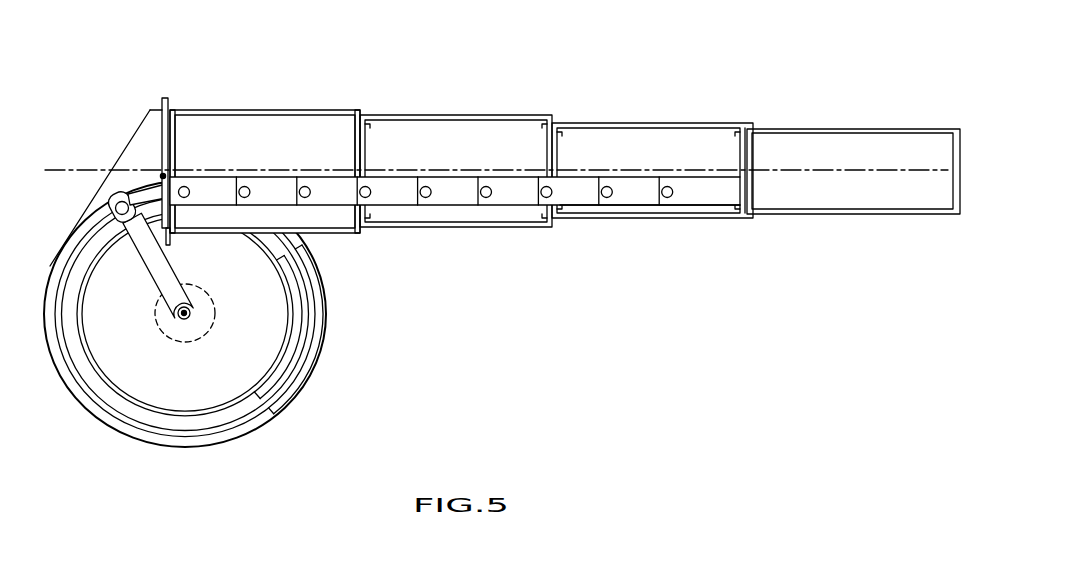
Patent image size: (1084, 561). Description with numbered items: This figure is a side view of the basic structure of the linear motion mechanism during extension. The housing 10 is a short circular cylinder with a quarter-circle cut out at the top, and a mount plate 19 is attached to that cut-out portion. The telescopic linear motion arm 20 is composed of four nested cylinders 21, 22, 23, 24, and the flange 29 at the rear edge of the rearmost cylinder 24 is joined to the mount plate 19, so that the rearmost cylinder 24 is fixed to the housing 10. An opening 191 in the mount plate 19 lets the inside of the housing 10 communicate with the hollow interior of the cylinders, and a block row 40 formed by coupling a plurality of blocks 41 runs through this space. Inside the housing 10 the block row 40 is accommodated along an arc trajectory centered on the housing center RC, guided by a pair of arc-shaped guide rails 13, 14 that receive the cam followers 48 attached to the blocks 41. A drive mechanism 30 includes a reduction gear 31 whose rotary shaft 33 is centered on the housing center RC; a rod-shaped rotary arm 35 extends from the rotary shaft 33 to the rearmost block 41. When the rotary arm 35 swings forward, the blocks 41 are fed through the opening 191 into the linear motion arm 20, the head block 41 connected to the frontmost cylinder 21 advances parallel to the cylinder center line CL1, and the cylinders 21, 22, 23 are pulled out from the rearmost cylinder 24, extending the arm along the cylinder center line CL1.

The housing 10 is at (293, 416).
The inner guide rail 13 is at (296, 295).
The outer guide rail 14 is at (306, 277).
The mount plate 19 is at (164, 100).
The opening 191 is at (162, 177).
The linear motion arm 20 is at (265, 131).
The flange 29 is at (172, 107).
The rearmost cylinder 24 is at (355, 107).
The cylinder 23 is at (460, 113).
The cylinder 22 is at (628, 122).
The frontmost cylinder 21 is at (797, 128).
The block row 40 is at (458, 222).
The cam follower 48 is at (668, 200).
The block 41 is at (722, 200).
The drive mechanism 30 is at (179, 278).
The rotary arm 35 is at (183, 281).
The rotary shaft 33 is at (189, 319).
The reduction gear 31 is at (213, 328).
The housing center RC is at (187, 311).
The cylinder center line CL1 is at (871, 168).